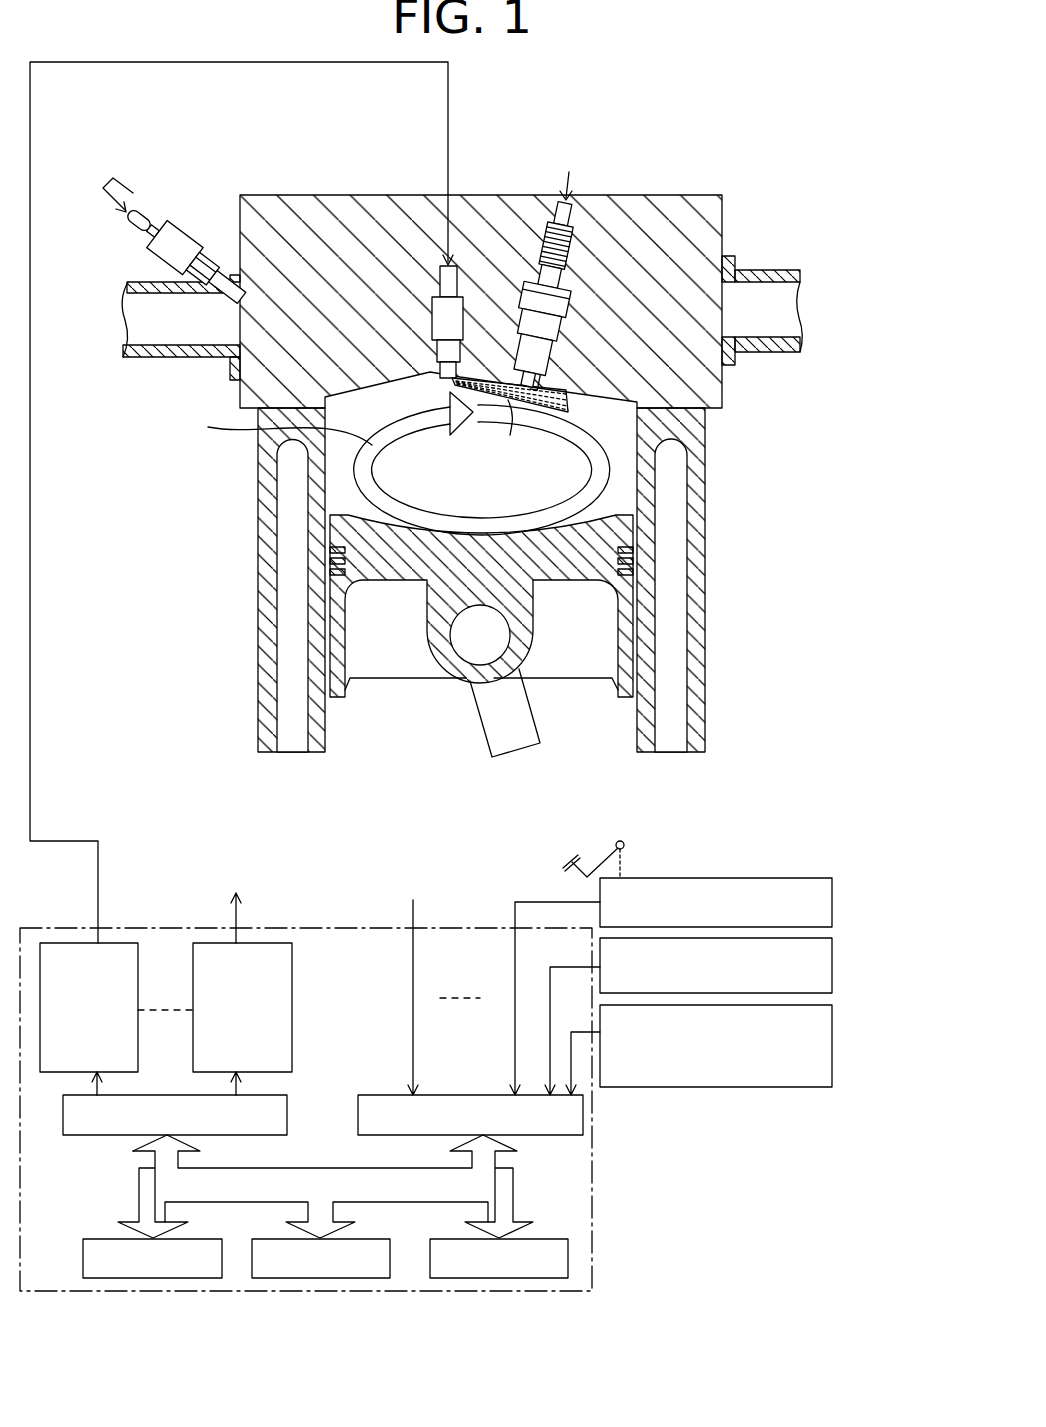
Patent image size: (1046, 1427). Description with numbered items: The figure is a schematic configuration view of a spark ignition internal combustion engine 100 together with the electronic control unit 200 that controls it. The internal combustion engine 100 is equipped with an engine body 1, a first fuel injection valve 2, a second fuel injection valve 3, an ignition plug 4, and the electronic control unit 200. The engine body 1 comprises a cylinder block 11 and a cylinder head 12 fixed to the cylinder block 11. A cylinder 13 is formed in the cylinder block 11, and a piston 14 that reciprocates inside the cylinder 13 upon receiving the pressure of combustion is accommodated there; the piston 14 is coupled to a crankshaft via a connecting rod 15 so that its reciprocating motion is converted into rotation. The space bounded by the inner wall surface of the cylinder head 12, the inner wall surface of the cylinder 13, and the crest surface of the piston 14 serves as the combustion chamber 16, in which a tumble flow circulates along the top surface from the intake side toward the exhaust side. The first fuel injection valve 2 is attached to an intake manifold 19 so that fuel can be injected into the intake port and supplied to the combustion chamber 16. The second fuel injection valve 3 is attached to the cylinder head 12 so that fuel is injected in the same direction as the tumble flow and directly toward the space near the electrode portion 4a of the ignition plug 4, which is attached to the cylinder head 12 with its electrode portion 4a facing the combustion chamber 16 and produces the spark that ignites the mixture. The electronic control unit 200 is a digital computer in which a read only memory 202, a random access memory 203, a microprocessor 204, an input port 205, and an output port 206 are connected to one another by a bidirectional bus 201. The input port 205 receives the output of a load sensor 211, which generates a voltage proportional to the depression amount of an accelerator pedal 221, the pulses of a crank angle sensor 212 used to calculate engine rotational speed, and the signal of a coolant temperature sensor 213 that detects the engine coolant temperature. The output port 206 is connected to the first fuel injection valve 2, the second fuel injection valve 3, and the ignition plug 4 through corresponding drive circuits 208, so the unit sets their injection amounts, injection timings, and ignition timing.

The internal combustion engine 100 is at (787, 160).
The engine body 1 is at (832, 368).
The cylinder block 11 is at (692, 440).
The cylinder head 12 is at (713, 381).
The cylinder 13 is at (325, 470).
The piston 14 is at (628, 602).
The connecting rod 15 is at (505, 732).
The combustion chamber 16 is at (503, 510).
The intake manifold 19 is at (147, 281).
The first fuel injection valve 2 is at (172, 247).
The second fuel injection valve 3 is at (443, 320).
The ignition plug 4 is at (565, 277).
The electrode portion 4a is at (528, 408).
The electronic control unit 200 is at (315, 928).
The bidirectional bus 201 is at (513, 1192).
The read only memory (ROM) 202 is at (153, 1278).
The random access memory (RAM) 203 is at (330, 1278).
The microprocessor (CPU) 204 is at (535, 1278).
The input port 205 is at (365, 1095).
The output port 206 is at (287, 1100).
The drive circuits 208 is at (203, 942).
The load sensor 211 is at (763, 877).
The crank angle sensor 212 is at (832, 960).
The coolant temperature sensor 213 is at (832, 1025).
The accelerator pedal 221 is at (603, 858).